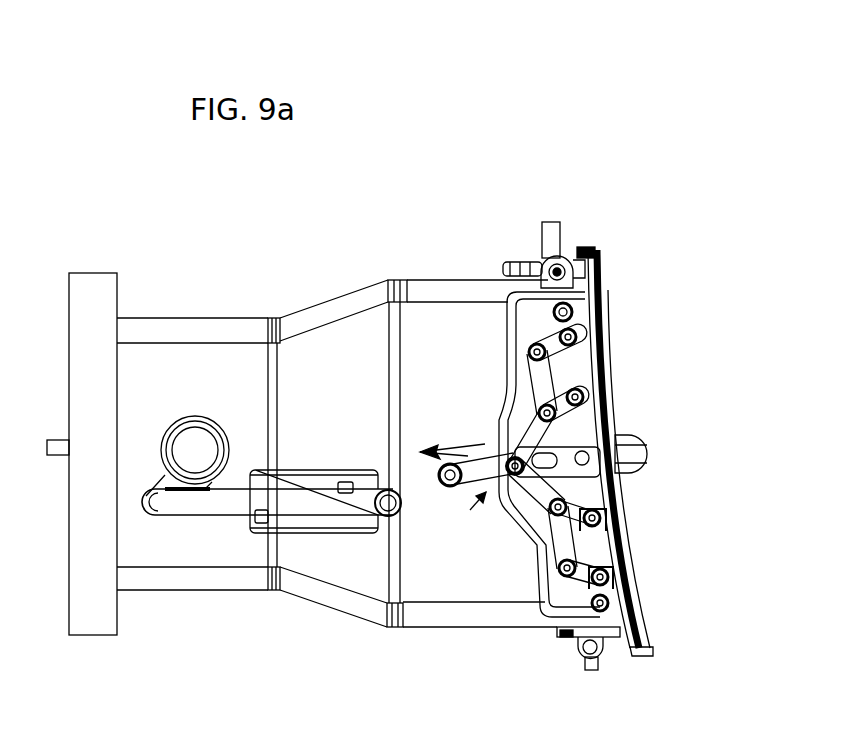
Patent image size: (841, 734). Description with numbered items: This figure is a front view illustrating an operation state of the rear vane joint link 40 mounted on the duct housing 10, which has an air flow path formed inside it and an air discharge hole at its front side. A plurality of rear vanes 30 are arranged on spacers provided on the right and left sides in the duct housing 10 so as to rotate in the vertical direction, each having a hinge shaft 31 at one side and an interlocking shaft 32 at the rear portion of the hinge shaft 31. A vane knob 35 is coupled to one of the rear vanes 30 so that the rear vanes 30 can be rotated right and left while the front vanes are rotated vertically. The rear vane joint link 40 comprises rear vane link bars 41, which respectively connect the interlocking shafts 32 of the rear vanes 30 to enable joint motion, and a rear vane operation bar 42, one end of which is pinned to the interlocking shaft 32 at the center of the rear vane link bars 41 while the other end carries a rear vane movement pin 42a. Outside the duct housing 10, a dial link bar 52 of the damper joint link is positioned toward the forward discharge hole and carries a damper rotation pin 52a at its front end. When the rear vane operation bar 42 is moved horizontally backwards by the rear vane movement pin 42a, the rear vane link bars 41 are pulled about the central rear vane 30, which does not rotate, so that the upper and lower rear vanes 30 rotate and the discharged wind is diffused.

The duct housing 10 is at (238, 372).
The rear vanes 30 is at (600, 558).
The hinge shafts 31 is at (618, 560).
The interlocking shafts 32 is at (545, 597).
The vane knob 35 is at (645, 445).
The rear vane joint link 40 is at (473, 503).
The rear vane link bars 41 is at (562, 543).
The rear vane operation bar 42 is at (480, 455).
The rear vane movement pin 42a is at (445, 458).
The dial link bar 52 is at (215, 505).
The damper rotation pin 52a is at (378, 508).